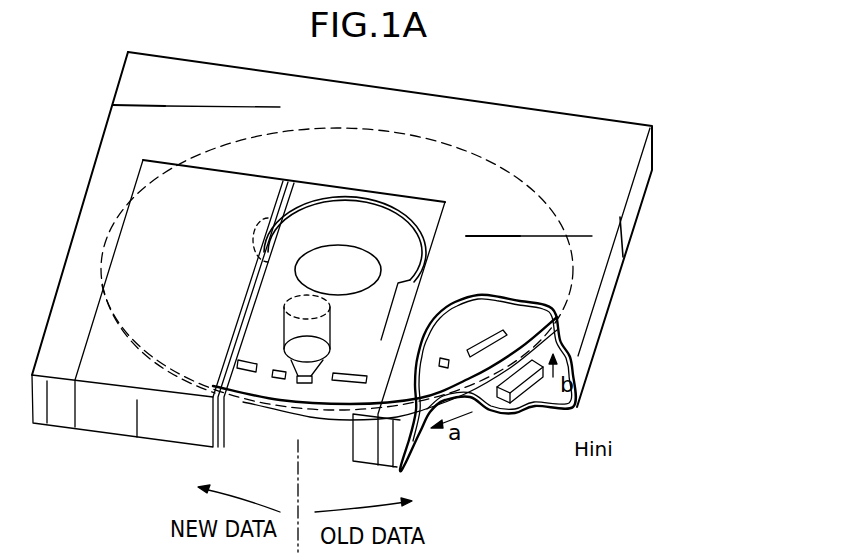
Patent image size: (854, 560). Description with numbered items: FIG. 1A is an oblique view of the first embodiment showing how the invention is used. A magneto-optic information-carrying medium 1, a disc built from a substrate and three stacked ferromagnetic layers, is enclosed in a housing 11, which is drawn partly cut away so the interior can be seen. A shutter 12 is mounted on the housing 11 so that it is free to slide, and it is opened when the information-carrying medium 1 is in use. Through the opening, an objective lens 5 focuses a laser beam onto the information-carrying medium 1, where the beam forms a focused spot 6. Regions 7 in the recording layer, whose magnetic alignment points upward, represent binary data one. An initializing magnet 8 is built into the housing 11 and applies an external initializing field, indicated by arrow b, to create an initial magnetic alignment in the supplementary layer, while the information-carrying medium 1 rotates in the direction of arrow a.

The information-carrying medium 1 is at (300, 417).
The objective lens 5 is at (283, 352).
The focused spot 6 is at (291, 384).
The regions of upward magnetic alignment 7 is at (455, 366).
The initializing magnet 8 is at (535, 397).
The housing 11 is at (586, 114).
The shutter 12 is at (97, 432).